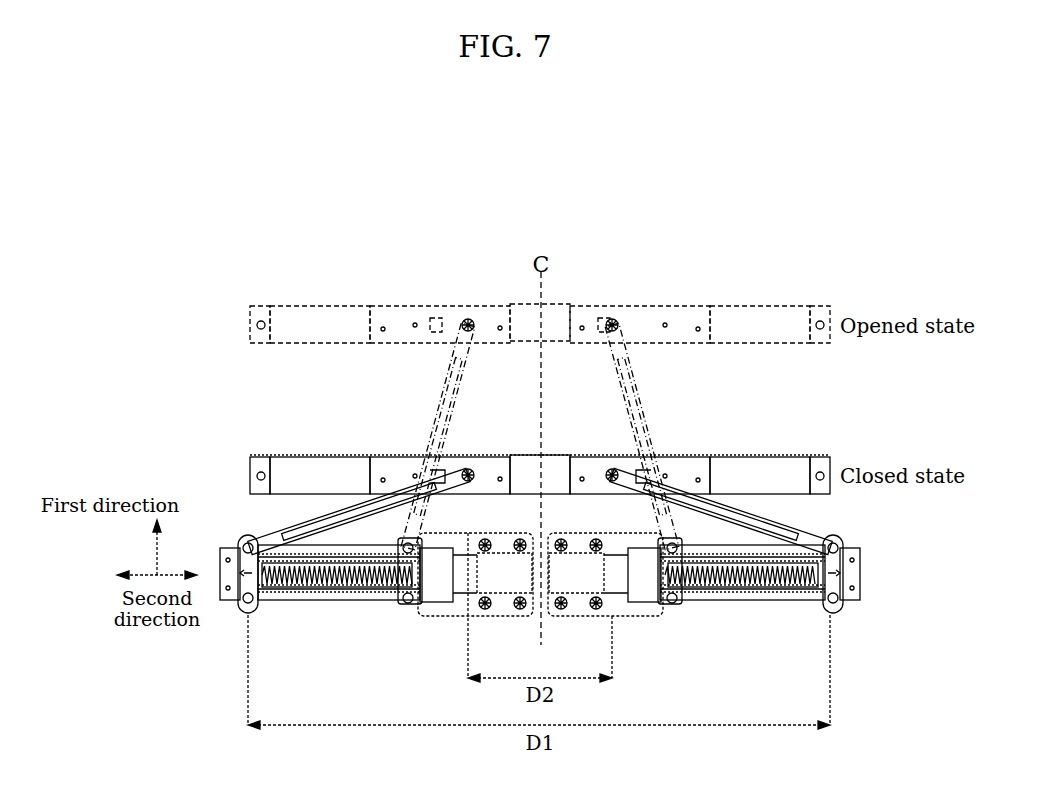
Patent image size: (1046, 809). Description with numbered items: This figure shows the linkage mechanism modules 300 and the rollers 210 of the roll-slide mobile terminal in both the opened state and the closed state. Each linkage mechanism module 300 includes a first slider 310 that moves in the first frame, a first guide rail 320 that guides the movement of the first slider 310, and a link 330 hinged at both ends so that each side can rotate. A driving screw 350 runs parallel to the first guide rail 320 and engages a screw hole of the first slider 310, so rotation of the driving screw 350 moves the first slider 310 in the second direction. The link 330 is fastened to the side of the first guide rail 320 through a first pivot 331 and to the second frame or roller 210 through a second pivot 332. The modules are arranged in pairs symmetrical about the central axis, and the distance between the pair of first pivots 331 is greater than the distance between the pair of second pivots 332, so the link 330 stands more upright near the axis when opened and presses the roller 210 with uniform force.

The roller 210 is at (804, 449).
The linkage mechanism module 300 is at (390, 666).
The first slider 310 is at (262, 604).
The first guide rail 320 is at (340, 562).
The link 330 is at (346, 590).
The first pivot 331 is at (246, 544).
The second pivot 332 is at (466, 320).
The driving screw 350 is at (382, 604).